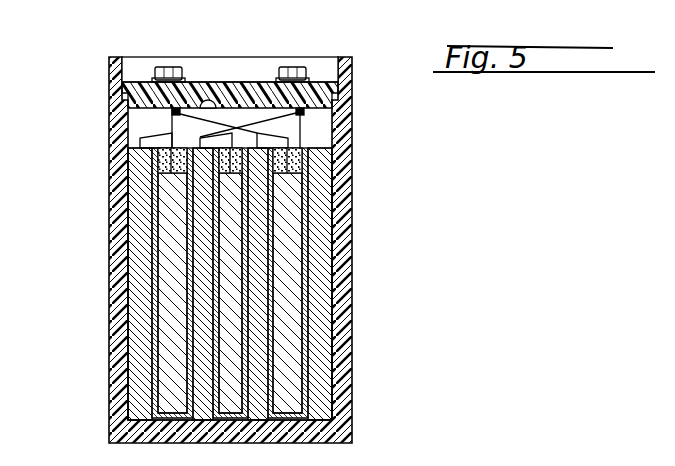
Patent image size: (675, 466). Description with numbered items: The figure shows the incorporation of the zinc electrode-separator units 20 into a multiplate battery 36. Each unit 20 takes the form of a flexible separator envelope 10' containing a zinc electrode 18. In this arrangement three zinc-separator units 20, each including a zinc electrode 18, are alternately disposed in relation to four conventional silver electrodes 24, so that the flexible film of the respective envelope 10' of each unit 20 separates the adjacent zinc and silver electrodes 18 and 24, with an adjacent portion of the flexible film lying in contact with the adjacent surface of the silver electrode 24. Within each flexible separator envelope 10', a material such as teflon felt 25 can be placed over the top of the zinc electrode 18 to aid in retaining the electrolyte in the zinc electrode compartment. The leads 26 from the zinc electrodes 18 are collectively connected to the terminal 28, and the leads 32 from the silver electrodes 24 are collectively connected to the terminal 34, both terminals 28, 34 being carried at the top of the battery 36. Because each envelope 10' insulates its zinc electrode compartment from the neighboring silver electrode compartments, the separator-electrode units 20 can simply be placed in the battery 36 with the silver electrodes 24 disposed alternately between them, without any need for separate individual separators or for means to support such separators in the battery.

The flexible separator envelope 10' is at (232, 284).
The zinc electrode 18 is at (273, 252).
The zinc electrode-separator unit 20 is at (313, 213).
The silver electrode 24 is at (200, 262).
The teflon felt 25 is at (305, 164).
The lead 26 is at (230, 124).
The terminal 28 is at (163, 67).
The lead 32 is at (250, 128).
The terminal 34 is at (295, 67).
The multiplate battery 36 is at (378, 147).